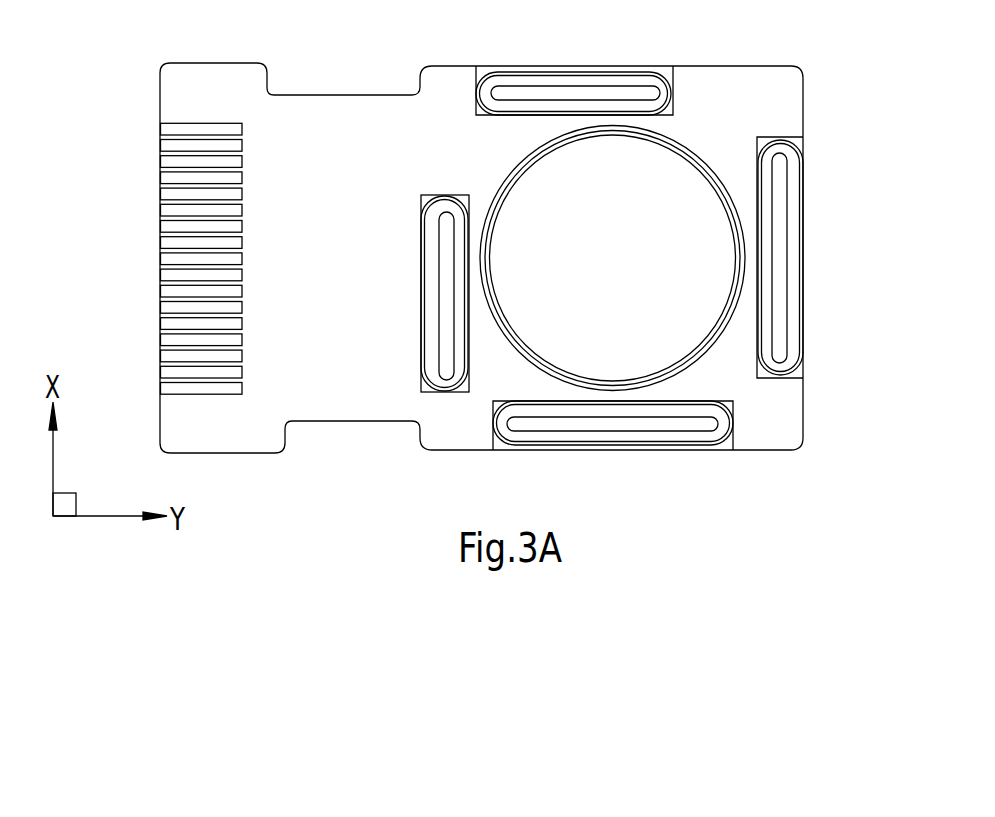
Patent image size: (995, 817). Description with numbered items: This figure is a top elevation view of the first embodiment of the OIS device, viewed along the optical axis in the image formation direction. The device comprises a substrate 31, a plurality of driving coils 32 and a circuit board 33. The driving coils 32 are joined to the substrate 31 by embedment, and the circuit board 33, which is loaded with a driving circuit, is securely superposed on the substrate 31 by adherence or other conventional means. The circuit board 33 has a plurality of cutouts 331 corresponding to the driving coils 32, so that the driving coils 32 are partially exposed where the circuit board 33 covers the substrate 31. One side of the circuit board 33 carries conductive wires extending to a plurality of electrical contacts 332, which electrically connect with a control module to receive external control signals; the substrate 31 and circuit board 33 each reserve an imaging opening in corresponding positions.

The substrate 31 is at (794, 372).
The driving coils 32 is at (793, 231).
The circuit board 33 is at (210, 83).
The cutouts 331 is at (423, 197).
The electrical contacts 332 is at (187, 227).